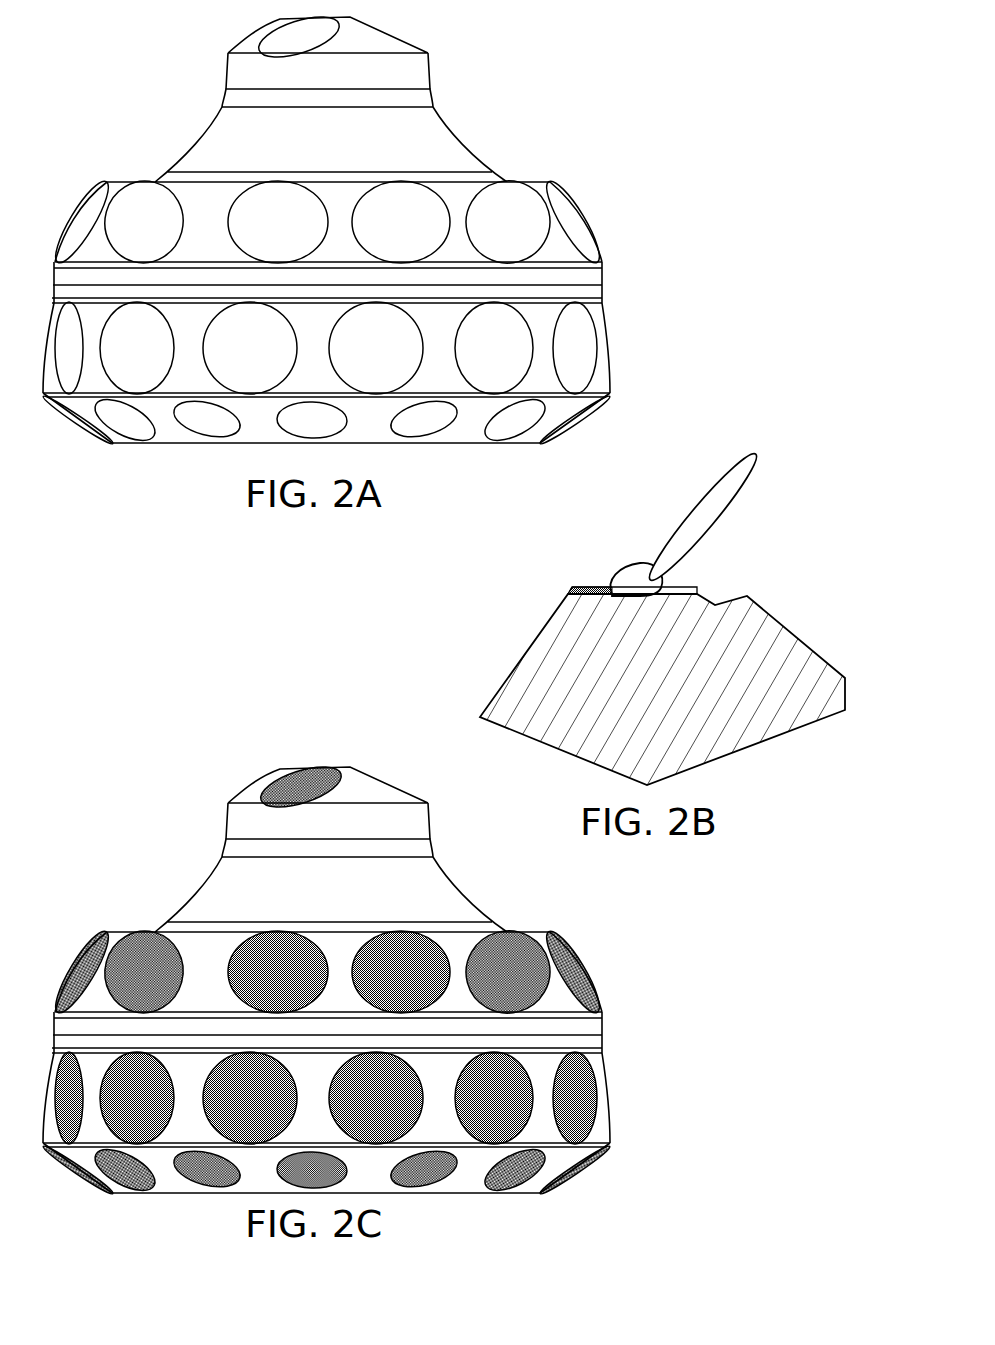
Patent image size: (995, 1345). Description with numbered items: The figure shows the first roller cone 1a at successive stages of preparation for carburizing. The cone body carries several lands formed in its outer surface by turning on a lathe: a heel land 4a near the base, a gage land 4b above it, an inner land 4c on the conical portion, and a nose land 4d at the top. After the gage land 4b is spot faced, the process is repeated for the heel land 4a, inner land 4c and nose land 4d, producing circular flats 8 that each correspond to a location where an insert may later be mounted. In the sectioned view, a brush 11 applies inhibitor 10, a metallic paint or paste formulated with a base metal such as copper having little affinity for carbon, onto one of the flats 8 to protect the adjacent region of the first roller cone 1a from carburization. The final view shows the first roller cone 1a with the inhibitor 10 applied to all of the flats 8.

In FIG. 2A, the first roller cone 1a is at (114, 75).
In FIG. 2B, the first roller cone 1a is at (523, 678).
In FIG. 2C, the first roller cone 1a is at (106, 811).
In FIG. 2A, the heel land 4a is at (463, 428).
In FIG. 2A, the gage land 4b is at (606, 347).
In FIG. 2A, the inner land 4c is at (528, 188).
In FIG. 2A, the nose land 4d is at (383, 42).
In FIG. 2A, the flats 8 is at (290, 34).
In FIG. 2B, the flats 8 is at (683, 588).
In FIG. 2B, the inhibitor 10 is at (573, 587).
In FIG. 2C, the inhibitor 10 is at (297, 781).
In FIG. 2B, the brush 11 is at (730, 489).